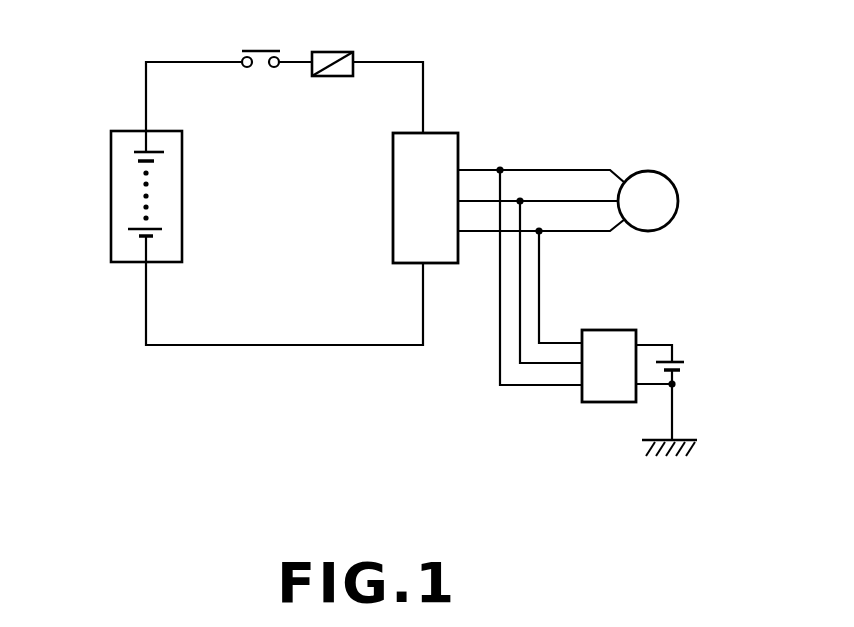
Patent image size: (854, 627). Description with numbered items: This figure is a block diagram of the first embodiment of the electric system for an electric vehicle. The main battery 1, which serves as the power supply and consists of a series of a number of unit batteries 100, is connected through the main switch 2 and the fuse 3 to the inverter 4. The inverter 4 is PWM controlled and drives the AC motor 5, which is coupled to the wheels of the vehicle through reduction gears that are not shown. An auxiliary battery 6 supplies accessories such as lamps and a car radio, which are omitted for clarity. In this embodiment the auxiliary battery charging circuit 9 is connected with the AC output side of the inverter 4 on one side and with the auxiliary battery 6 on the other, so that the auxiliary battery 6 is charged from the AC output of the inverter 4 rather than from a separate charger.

The main battery 1 is at (119, 130).
The unit batteries 100 is at (134, 152).
The main switch 2 is at (256, 49).
The fuse 3 is at (347, 52).
The inverter 4 is at (447, 133).
The AC motor 5 is at (672, 182).
The auxiliary battery 6 is at (687, 365).
The auxiliary battery charging circuit 9 is at (597, 403).